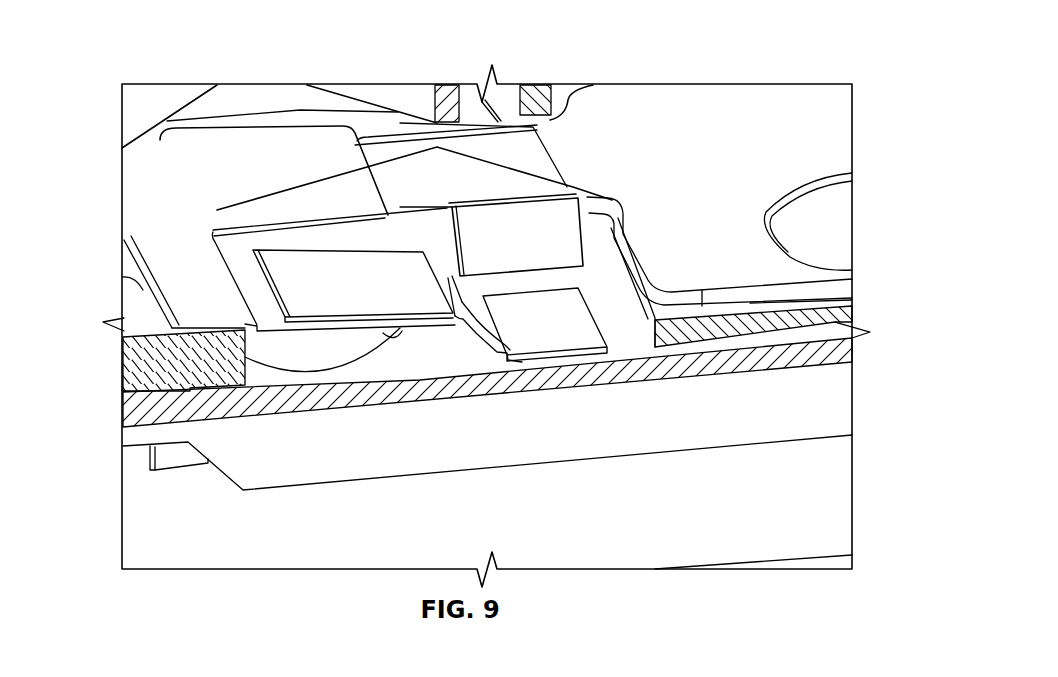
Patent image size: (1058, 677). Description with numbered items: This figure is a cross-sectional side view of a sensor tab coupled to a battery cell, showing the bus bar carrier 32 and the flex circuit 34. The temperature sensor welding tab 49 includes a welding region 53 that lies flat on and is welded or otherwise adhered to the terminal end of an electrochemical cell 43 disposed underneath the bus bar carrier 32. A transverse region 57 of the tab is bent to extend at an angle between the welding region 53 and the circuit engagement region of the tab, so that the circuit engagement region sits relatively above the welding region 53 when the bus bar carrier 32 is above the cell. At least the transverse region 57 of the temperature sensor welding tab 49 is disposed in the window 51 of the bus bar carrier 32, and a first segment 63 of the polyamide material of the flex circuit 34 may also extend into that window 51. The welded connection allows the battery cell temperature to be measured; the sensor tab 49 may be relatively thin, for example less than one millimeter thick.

The bus bar carrier 32 is at (747, 330).
The flex circuit 34 is at (762, 278).
The terminal end of electrochemical cell 43 is at (268, 397).
The temperature sensor welding tab 49 is at (563, 223).
The window 51 is at (437, 147).
The welding region 53 is at (545, 338).
The transverse region 57 is at (472, 317).
The first segment 63 is at (300, 276).